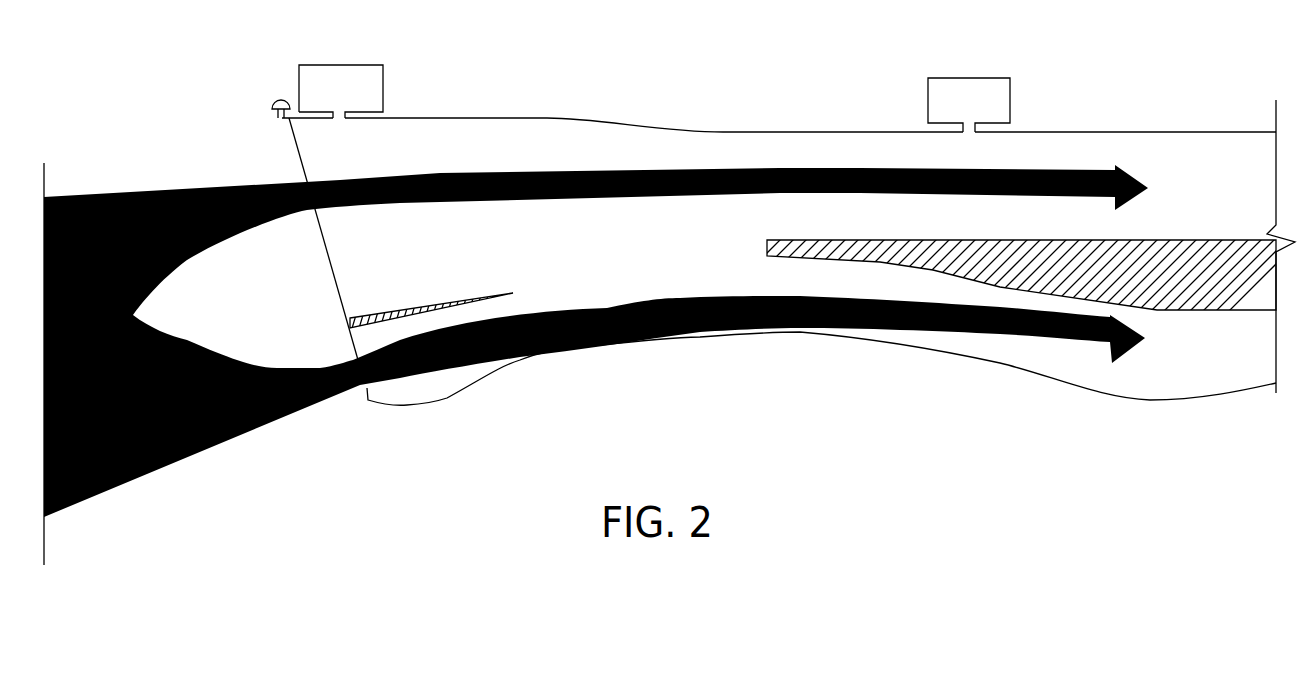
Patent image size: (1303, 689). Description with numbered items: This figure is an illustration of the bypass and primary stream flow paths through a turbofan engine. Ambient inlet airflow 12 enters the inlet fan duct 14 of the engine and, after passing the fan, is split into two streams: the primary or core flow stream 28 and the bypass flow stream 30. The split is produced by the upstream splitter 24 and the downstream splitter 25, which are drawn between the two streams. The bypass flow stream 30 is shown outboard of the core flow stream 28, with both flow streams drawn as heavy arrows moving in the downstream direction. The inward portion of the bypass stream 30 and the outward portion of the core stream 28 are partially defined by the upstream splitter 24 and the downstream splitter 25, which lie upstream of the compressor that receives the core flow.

The ambient inlet airflow 12 is at (118, 193).
The inlet fan duct 14 is at (398, 59).
The upstream splitter 24 is at (417, 308).
The downstream splitter 25 is at (766, 241).
The primary (core) flow stream 28 is at (607, 308).
The bypass flow stream 30 is at (783, 168).